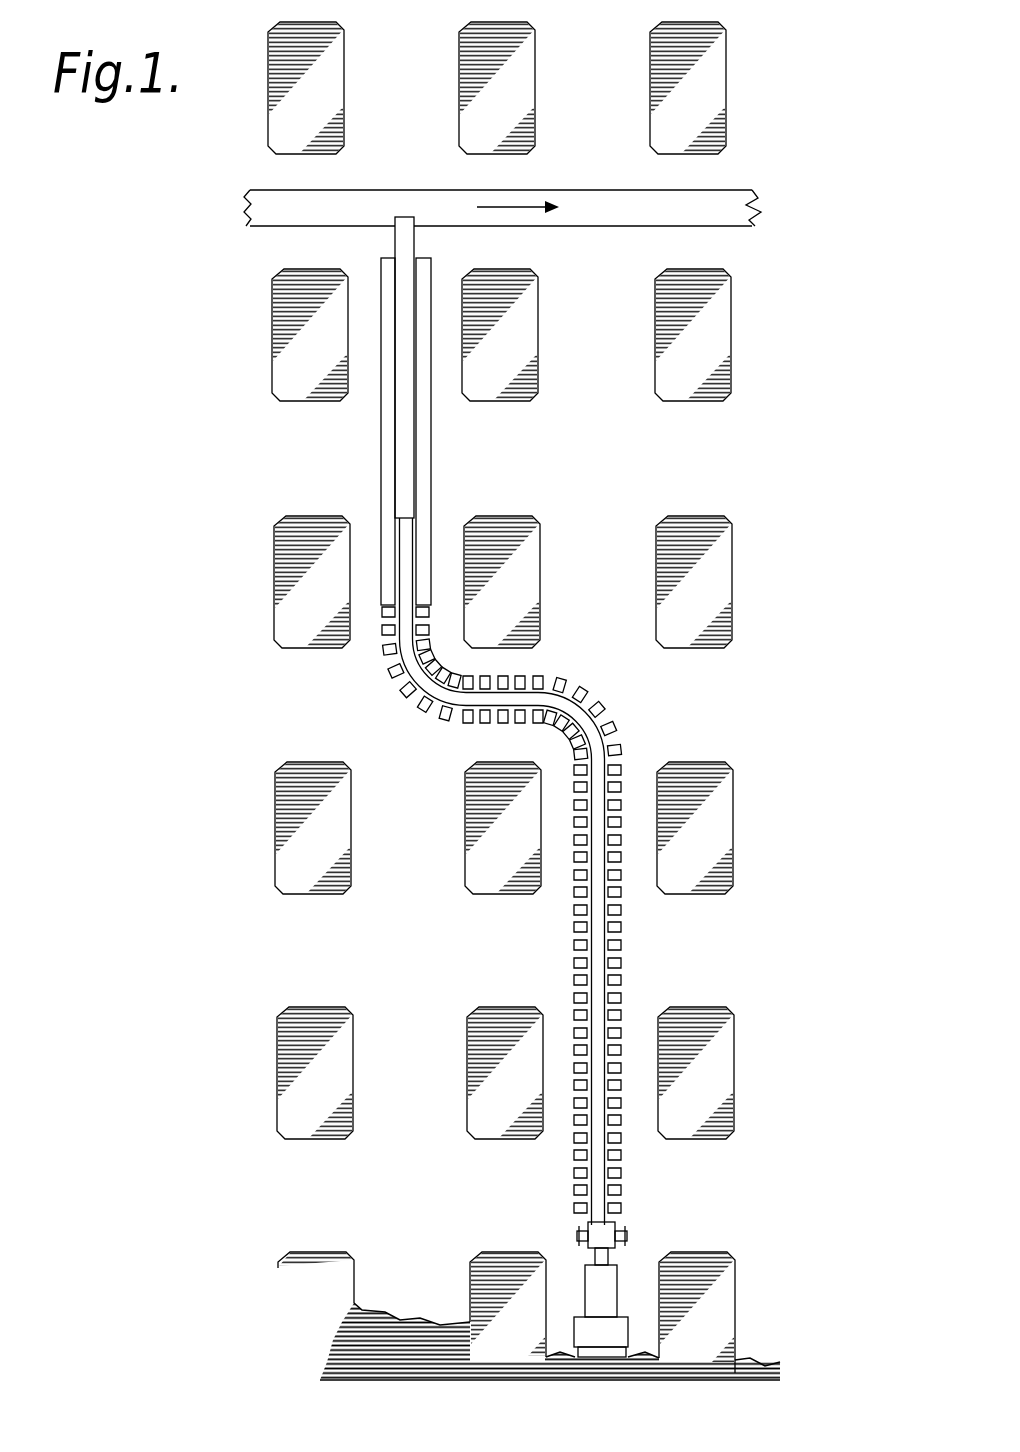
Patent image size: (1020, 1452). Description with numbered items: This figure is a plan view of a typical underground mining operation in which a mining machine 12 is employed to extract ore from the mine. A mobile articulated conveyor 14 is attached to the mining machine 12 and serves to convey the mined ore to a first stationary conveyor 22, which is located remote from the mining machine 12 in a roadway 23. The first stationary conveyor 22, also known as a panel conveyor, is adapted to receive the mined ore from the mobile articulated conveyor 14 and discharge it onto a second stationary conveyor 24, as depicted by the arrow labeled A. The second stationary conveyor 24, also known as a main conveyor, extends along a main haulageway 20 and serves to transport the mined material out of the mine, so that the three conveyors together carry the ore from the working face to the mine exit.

The mining machine 12 is at (616, 1320).
The mobile articulated conveyor 14 is at (577, 707).
The main haulageway 20 is at (838, 275).
The first stationary conveyor 22 is at (386, 277).
The roadway 23 is at (447, 323).
The second stationary conveyor 24 is at (652, 207).